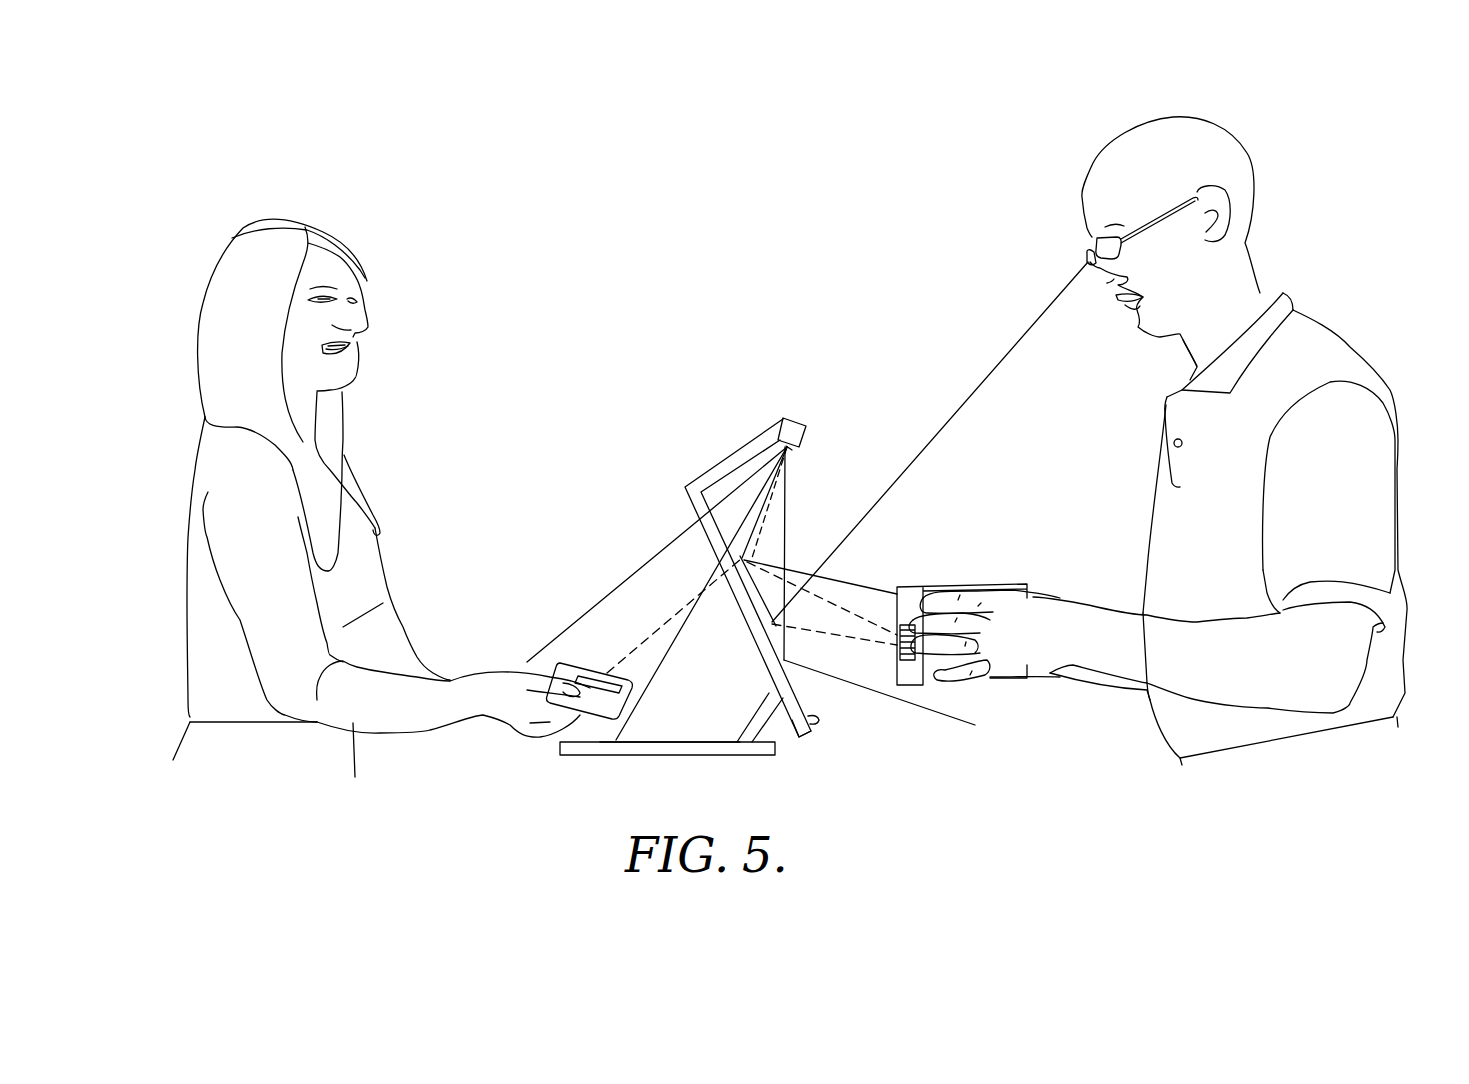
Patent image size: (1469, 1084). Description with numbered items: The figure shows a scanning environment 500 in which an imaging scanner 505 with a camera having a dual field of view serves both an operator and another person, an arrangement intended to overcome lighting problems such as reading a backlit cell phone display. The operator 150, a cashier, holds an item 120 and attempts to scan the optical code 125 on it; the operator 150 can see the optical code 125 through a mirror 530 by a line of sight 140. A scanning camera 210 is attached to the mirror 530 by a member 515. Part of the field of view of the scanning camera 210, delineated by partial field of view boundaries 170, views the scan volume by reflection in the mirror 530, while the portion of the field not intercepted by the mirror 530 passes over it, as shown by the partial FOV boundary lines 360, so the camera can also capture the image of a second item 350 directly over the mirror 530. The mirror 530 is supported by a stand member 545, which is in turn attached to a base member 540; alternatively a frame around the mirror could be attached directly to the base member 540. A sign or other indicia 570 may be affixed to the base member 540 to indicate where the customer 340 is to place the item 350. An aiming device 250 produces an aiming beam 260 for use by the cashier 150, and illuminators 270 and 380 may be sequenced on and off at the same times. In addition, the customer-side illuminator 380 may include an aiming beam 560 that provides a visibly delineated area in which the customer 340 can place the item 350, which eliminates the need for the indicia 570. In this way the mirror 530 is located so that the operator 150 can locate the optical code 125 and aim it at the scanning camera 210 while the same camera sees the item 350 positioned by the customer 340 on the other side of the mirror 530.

The item 120 is at (1018, 586).
The optical code 125 is at (900, 650).
The line of sight 140 is at (958, 409).
The operator 150 is at (1388, 386).
The partial field of view boundaries 170 is at (860, 585).
The scanning camera 210 is at (797, 418).
The aiming device 250 is at (800, 450).
The aiming beam 260 is at (860, 612).
The illuminator 270 is at (818, 722).
The customer 340 is at (352, 432).
The item 350 is at (578, 672).
The partial FOV boundary lines 360 is at (659, 553).
The customer-side illuminator 380 is at (722, 572).
The scanning environment 500 is at (712, 205).
The imaging scanner 505 is at (585, 552).
The member 515 is at (737, 447).
The mirror 530 is at (800, 745).
The base member 540 is at (688, 757).
The stand member 545 is at (757, 705).
The aiming beam 560 is at (660, 626).
The indicia 570 is at (652, 740).